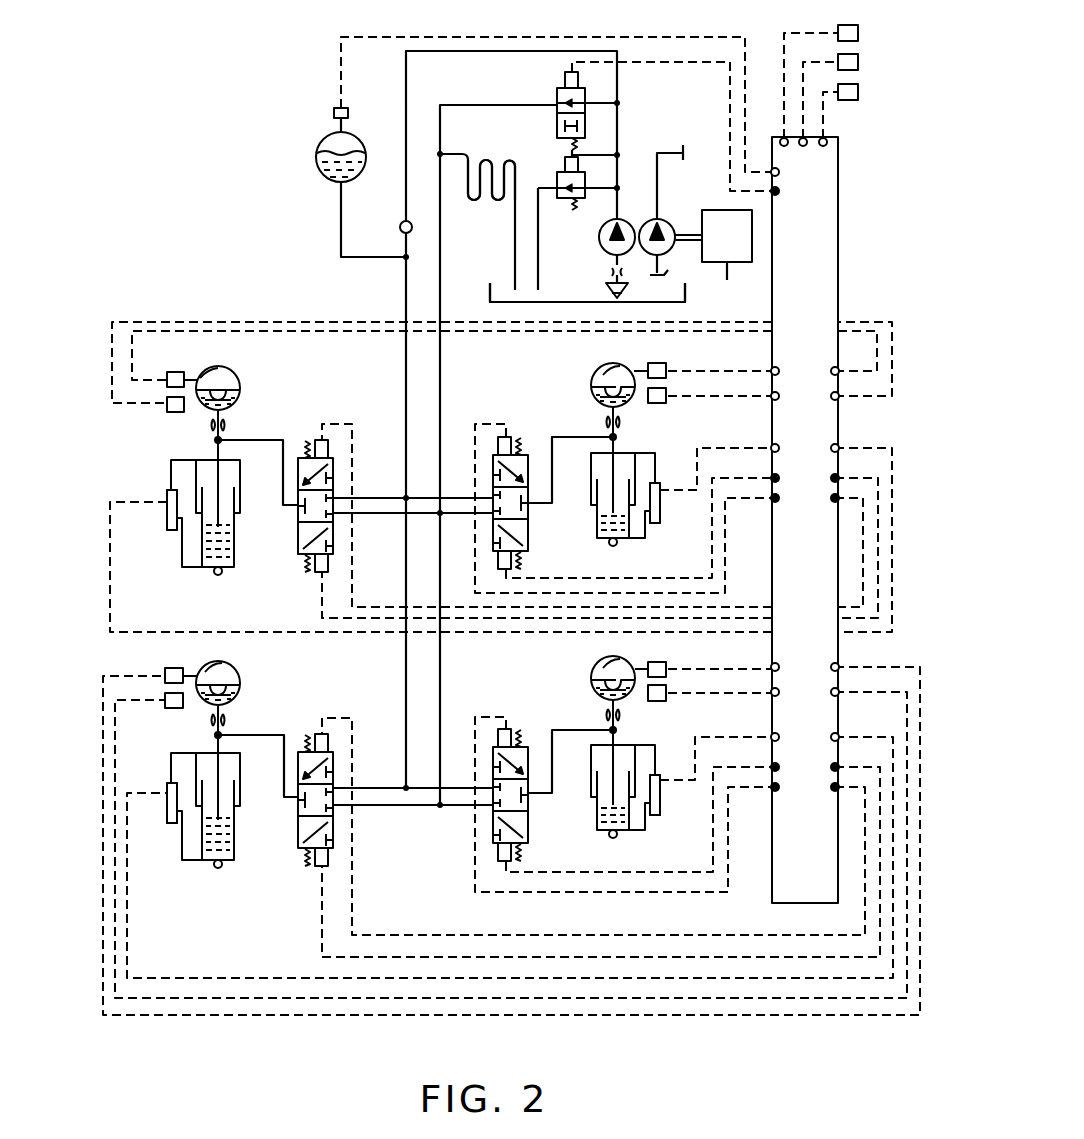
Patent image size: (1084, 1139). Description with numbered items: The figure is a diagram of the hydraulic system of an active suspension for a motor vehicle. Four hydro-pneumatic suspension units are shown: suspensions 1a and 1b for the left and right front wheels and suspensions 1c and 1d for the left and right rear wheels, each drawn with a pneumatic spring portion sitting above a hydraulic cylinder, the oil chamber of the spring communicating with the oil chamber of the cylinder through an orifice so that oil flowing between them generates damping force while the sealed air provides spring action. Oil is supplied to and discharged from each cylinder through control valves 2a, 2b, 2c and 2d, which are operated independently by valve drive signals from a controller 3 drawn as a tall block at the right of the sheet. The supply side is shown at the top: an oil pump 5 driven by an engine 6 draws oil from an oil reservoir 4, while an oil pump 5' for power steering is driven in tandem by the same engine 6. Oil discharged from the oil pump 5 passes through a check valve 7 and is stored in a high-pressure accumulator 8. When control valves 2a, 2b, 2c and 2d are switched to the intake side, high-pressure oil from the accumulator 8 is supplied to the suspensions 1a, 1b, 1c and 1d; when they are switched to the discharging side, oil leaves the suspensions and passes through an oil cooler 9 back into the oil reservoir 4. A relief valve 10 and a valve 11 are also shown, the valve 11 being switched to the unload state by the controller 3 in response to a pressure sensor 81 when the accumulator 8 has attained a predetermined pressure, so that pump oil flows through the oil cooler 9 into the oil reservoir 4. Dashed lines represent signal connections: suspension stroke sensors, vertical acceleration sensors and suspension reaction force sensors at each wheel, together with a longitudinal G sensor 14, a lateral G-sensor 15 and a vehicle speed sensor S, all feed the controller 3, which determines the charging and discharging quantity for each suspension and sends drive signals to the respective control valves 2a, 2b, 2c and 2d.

The suspension of left front wheel 1a is at (238, 532).
The suspension of right front wheel 1b is at (593, 495).
The suspension of left rear wheel 1c is at (238, 822).
The suspension of right rear wheel 1d is at (593, 800).
The control valve 2a is at (338, 470).
The control valve 2b is at (490, 470).
The control valve 2c is at (338, 765).
The control valve 2d is at (490, 822).
The controller 3 is at (840, 292).
The oil reservoir 4 is at (560, 300).
The oil pump 5 is at (619, 216).
The oil pump for power steering 5' is at (662, 215).
The engine 6 is at (727, 262).
The check valve 7 is at (400, 228).
The high-pressure accumulator 8 is at (322, 170).
The pressure sensor 81 is at (334, 113).
The oil cooler 9 is at (480, 210).
The relief valve 10 is at (563, 174).
The valve 11 is at (557, 125).
The longitudinal G sensor 14 is at (858, 62).
The lateral G-sensor 15 is at (858, 33).
The vehicle speed sensor S is at (858, 92).